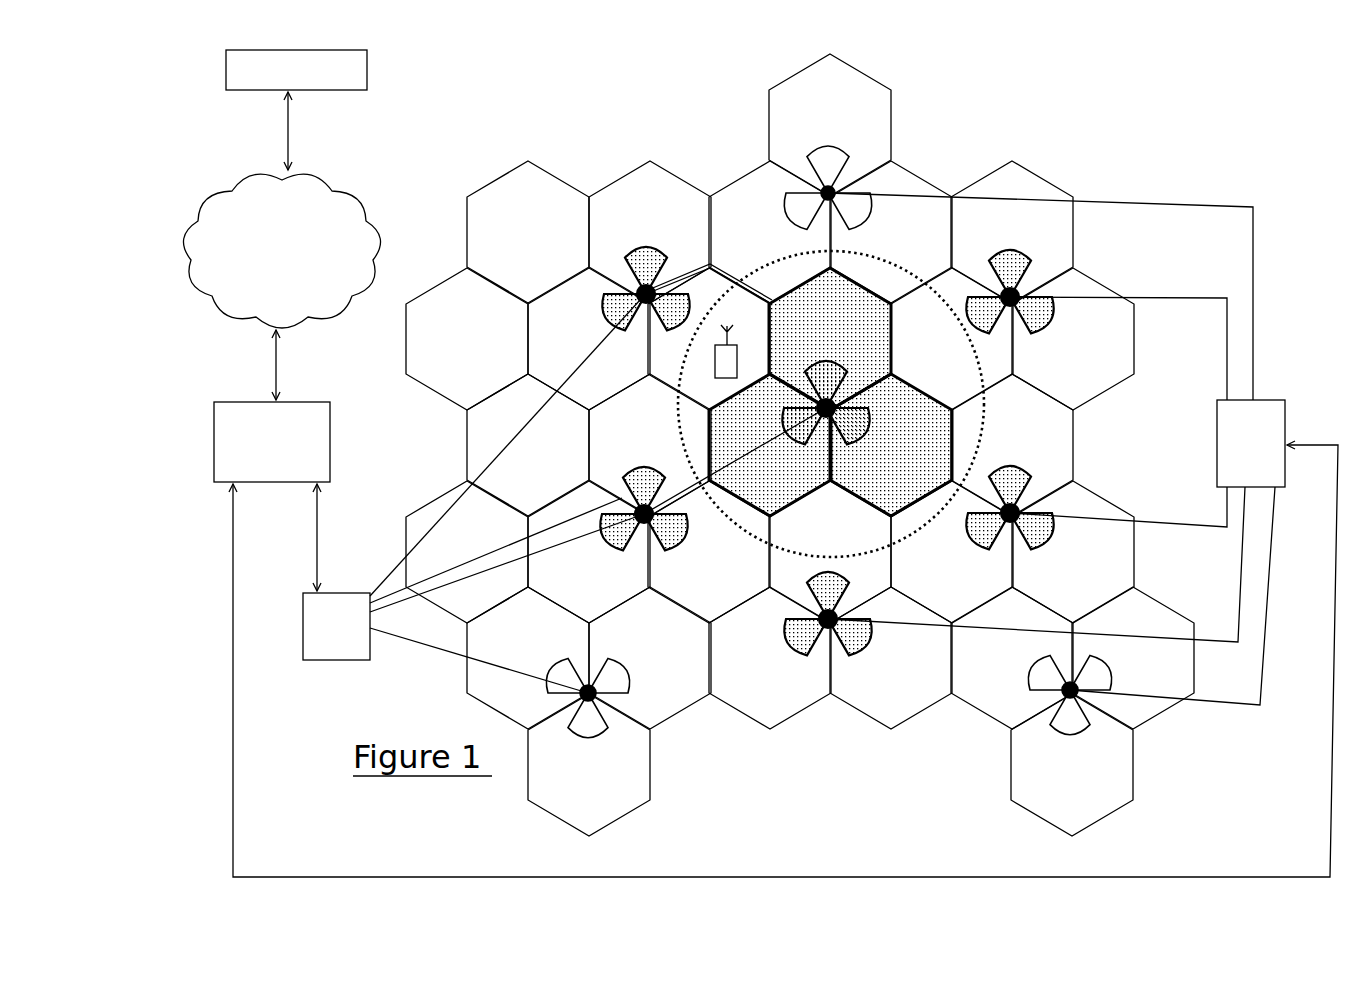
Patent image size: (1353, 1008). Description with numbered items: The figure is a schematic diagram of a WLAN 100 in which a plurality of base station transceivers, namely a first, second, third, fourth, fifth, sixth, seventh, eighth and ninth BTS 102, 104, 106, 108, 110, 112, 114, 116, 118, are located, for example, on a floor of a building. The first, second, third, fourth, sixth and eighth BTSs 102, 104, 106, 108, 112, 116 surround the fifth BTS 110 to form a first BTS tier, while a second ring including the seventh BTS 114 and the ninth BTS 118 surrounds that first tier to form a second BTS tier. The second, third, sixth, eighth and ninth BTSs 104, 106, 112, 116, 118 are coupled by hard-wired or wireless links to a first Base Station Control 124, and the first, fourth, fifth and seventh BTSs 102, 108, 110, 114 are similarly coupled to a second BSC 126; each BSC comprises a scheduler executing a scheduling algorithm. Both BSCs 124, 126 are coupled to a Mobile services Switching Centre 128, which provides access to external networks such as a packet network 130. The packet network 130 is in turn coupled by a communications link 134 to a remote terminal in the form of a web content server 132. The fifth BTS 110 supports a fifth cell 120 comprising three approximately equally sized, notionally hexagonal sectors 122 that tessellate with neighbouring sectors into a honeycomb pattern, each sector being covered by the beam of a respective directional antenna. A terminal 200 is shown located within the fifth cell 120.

The WLAN 100 is at (884, 757).
The first BTS 102 is at (668, 268).
The second BTS 104 is at (853, 187).
The third BTS 106 is at (1013, 307).
The fourth BTS 108 is at (648, 528).
The fifth BTS 110 is at (845, 407).
The sixth BTS 112 is at (1000, 528).
The seventh BTS 114 is at (585, 698).
The eighth BTS 116 is at (830, 630).
The ninth BTS 118 is at (1073, 698).
The fifth cell 120 is at (980, 427).
The sectors 122 is at (830, 392).
The first Base Station Control 124 is at (1285, 425).
The second Base Station Control 126 is at (316, 660).
The Mobile services Switching Centre 128 is at (212, 466).
The packet network 130 is at (358, 176).
The web content server 132 is at (367, 72).
The communications link 134 is at (292, 133).
The terminal 200 is at (715, 368).